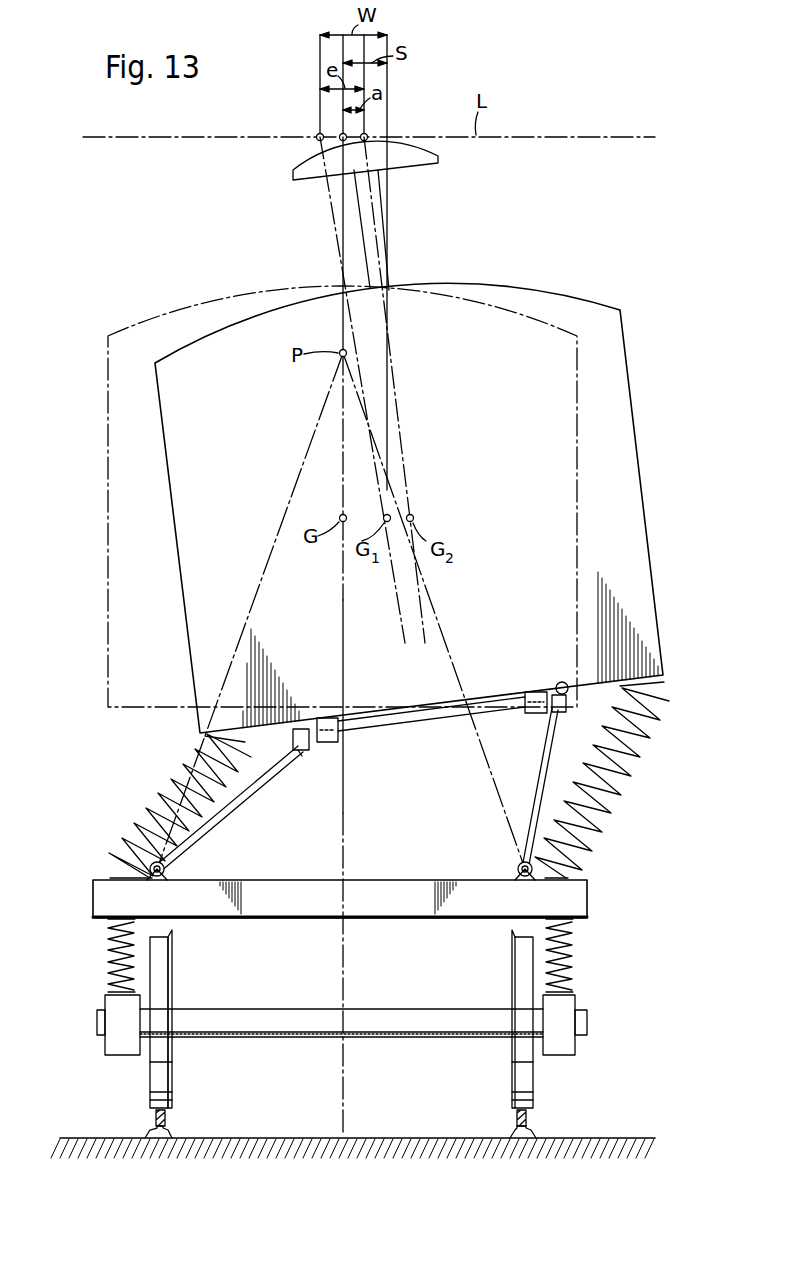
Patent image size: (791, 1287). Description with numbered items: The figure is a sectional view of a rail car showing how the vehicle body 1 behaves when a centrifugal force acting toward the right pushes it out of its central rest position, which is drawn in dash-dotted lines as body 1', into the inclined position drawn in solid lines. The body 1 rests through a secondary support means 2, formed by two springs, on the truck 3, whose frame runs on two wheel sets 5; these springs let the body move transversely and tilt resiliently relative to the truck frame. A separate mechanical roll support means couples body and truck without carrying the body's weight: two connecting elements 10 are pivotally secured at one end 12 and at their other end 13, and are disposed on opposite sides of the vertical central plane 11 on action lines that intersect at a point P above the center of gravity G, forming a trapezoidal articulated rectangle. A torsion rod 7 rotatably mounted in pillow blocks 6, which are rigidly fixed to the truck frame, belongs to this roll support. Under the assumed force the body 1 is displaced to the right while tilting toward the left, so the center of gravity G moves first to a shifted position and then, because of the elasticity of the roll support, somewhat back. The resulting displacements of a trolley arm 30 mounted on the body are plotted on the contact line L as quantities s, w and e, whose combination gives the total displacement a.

The car body 1 is at (412, 508).
The car body (untilted position) 1' is at (319, 496).
The secondary support means 2 is at (150, 795).
The truck 3 is at (85, 907).
The wheel sets 5 is at (132, 1070).
The pillow blocks 6 is at (338, 742).
The torsion rod 7 is at (393, 720).
The connecting elements 10 is at (238, 803).
The vertical central plane 11 is at (346, 668).
The lower end of bar 12 is at (170, 873).
The upper end of bar 13 is at (305, 752).
The trolley arm 30 is at (420, 166).